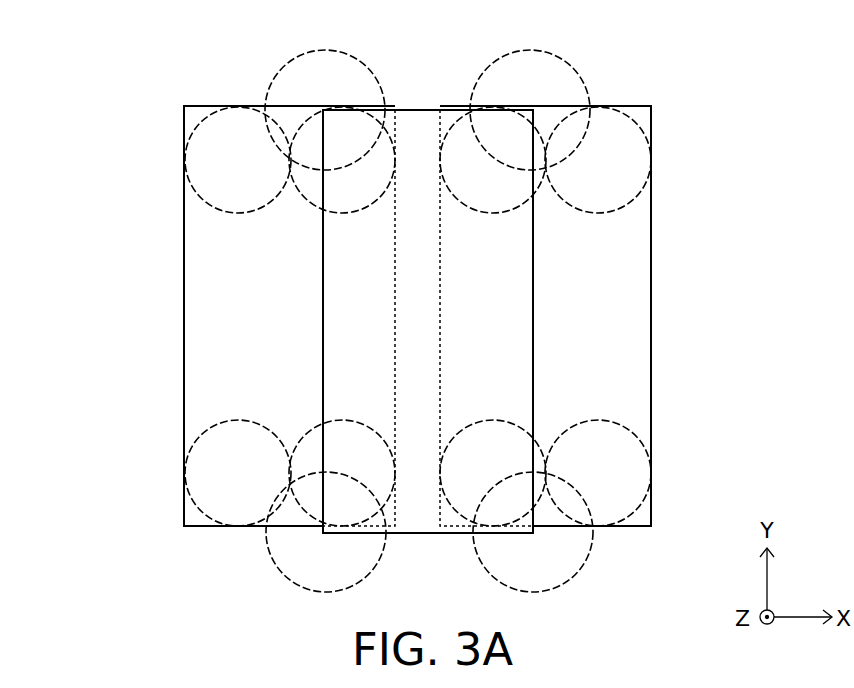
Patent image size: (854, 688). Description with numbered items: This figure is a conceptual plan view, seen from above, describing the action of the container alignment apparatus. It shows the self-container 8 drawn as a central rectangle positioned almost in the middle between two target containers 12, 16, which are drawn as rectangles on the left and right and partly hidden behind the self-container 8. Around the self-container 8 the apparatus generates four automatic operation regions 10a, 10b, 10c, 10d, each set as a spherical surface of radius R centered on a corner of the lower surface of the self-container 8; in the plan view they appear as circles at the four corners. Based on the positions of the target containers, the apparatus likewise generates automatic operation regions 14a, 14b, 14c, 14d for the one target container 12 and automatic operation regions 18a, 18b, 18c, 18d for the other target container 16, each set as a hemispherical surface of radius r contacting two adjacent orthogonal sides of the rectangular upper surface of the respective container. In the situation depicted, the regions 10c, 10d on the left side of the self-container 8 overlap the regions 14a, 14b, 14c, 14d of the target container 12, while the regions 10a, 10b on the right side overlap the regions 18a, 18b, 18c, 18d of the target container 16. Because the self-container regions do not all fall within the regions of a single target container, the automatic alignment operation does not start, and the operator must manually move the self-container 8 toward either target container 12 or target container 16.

The self-container 8 is at (420, 148).
The automatic operation region 10a is at (588, 560).
The automatic operation region 10b is at (588, 88).
The automatic operation region 10c is at (272, 562).
The automatic operation region 10d is at (270, 85).
The target container 12 is at (203, 256).
The automatic operation region 14a is at (382, 508).
The automatic operation region 14b is at (386, 125).
The automatic operation region 14c is at (198, 510).
The automatic operation region 14d is at (195, 121).
The target container 16 is at (630, 252).
The automatic operation region 18a is at (640, 512).
The automatic operation region 18b is at (640, 125).
The automatic operation region 18c is at (450, 508).
The automatic operation region 18d is at (448, 127).